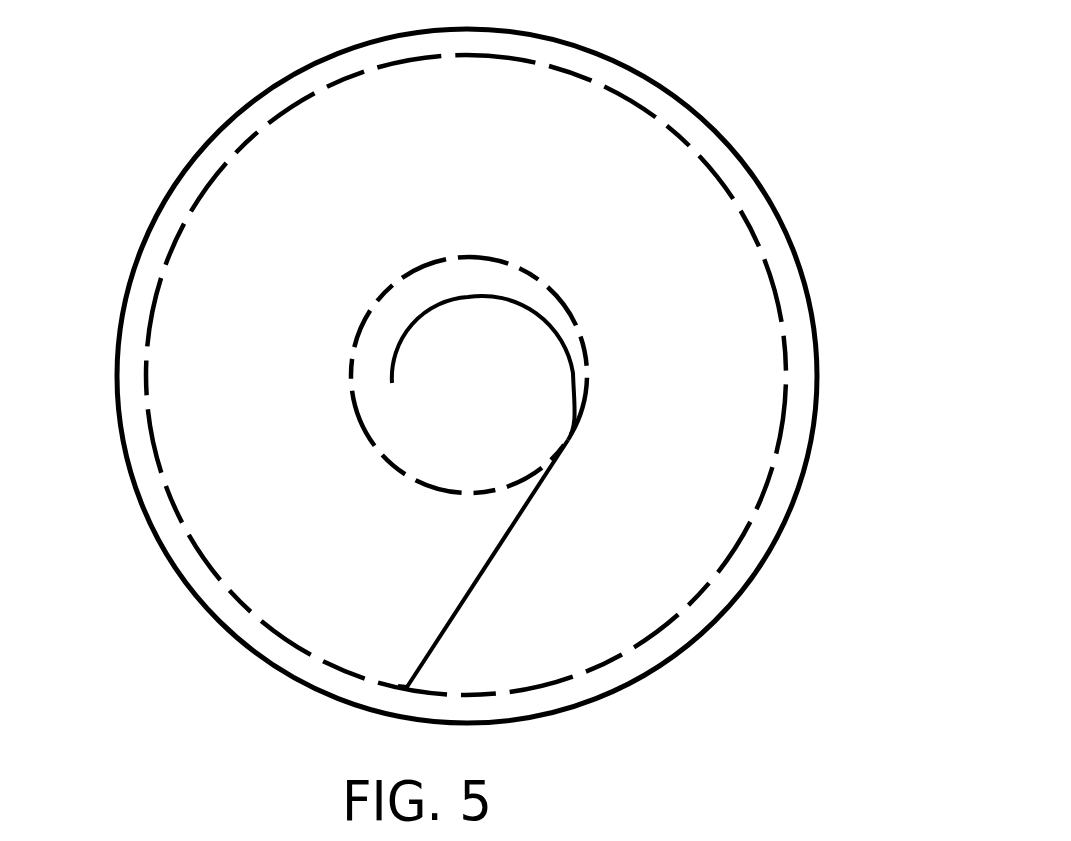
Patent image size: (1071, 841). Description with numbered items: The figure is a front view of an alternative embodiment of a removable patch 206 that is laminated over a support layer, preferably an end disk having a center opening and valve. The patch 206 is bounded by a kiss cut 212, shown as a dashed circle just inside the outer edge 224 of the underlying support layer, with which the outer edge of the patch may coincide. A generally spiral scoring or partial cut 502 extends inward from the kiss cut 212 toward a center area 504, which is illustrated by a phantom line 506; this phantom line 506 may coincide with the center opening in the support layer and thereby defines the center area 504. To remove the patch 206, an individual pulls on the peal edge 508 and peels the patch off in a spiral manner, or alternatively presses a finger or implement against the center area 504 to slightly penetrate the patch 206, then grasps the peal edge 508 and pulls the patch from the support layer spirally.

The patch 206 is at (300, 523).
The kiss cut 212 is at (680, 615).
The outer edge 224 is at (588, 703).
The spiral scoring or partial cut 502 is at (510, 552).
The center area 504 is at (505, 392).
The phantom line 506 is at (580, 328).
The peal edge 508 is at (503, 307).